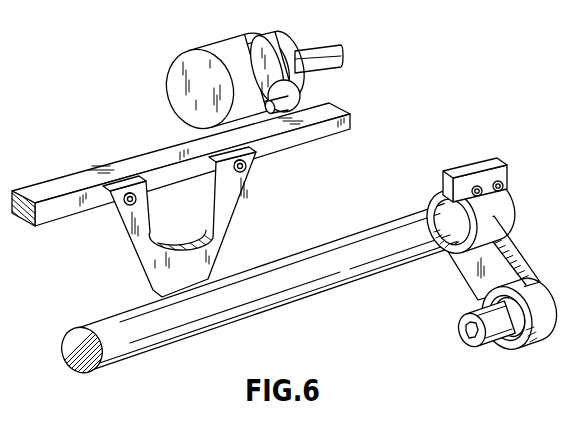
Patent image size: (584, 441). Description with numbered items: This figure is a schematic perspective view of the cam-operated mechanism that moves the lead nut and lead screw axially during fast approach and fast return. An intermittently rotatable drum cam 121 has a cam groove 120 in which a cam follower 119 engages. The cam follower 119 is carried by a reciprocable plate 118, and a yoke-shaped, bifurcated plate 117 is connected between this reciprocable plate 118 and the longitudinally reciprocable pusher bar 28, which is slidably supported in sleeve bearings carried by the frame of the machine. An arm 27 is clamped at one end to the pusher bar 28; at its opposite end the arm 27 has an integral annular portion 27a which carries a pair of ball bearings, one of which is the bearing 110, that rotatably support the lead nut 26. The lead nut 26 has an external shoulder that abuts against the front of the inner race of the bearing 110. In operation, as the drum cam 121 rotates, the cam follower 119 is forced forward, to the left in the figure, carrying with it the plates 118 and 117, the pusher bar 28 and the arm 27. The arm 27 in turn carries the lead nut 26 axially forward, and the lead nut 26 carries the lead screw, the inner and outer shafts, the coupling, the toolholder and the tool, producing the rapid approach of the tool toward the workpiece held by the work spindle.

The yoke-shaped bifurcated plate 117 is at (222, 232).
The reciprocable plate 118 is at (97, 163).
The cam follower 119 is at (298, 89).
The cam groove 120 is at (266, 62).
The drum cam 121 is at (221, 46).
The pusher bar 28 is at (355, 268).
The arm 27 is at (523, 262).
The annular portion 27a is at (538, 345).
The ball bearing 110 is at (515, 342).
The lead nut 26 is at (480, 348).